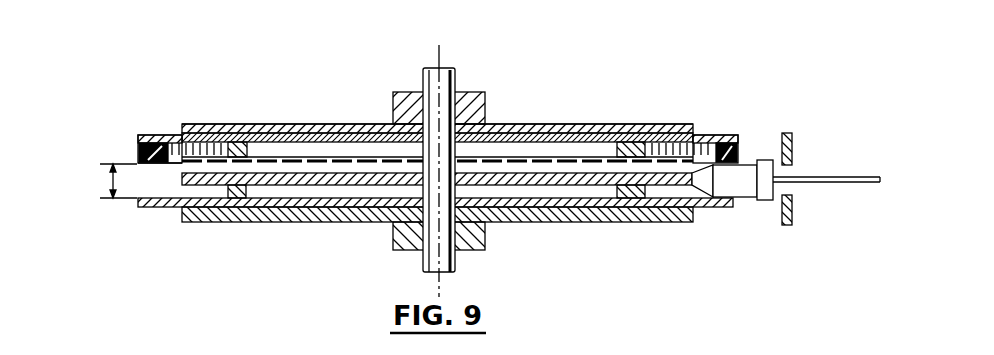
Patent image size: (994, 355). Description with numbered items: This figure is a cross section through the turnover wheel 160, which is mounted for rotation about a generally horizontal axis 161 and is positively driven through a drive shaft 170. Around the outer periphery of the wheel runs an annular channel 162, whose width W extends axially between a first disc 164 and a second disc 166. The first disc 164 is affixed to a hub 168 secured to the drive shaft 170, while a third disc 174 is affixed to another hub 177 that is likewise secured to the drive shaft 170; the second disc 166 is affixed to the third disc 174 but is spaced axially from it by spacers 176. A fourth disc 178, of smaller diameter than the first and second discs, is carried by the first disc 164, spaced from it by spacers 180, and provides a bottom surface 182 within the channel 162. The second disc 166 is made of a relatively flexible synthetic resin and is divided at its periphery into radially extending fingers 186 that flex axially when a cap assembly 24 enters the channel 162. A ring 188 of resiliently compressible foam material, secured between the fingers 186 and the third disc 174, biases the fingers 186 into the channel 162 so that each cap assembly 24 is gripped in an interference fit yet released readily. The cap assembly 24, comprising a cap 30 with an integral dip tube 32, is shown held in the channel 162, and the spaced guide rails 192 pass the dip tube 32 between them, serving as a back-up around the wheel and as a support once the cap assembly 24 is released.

The turnover wheel 160 is at (500, 120).
The horizontal axis 161 is at (441, 50).
The drive shaft 170 is at (430, 257).
The hub 177 is at (352, 123).
The third disc 174 is at (305, 132).
The spacers 176 is at (257, 141).
The fourth disc 178 is at (548, 160).
The ring 188 is at (138, 146).
The bottom surface 182 is at (166, 150).
The second disc 166 is at (137, 156).
The fingers 186 is at (204, 146).
The annular channel 162 is at (160, 184).
The spacers 180 is at (240, 190).
The first disc 164 is at (142, 206).
The hub 168 is at (350, 215).
The cap 30 is at (745, 196).
The cap assembly 24 is at (760, 201).
The dip tube 32 is at (830, 180).
The guide rails 192 is at (793, 141).
The width W is at (110, 181).